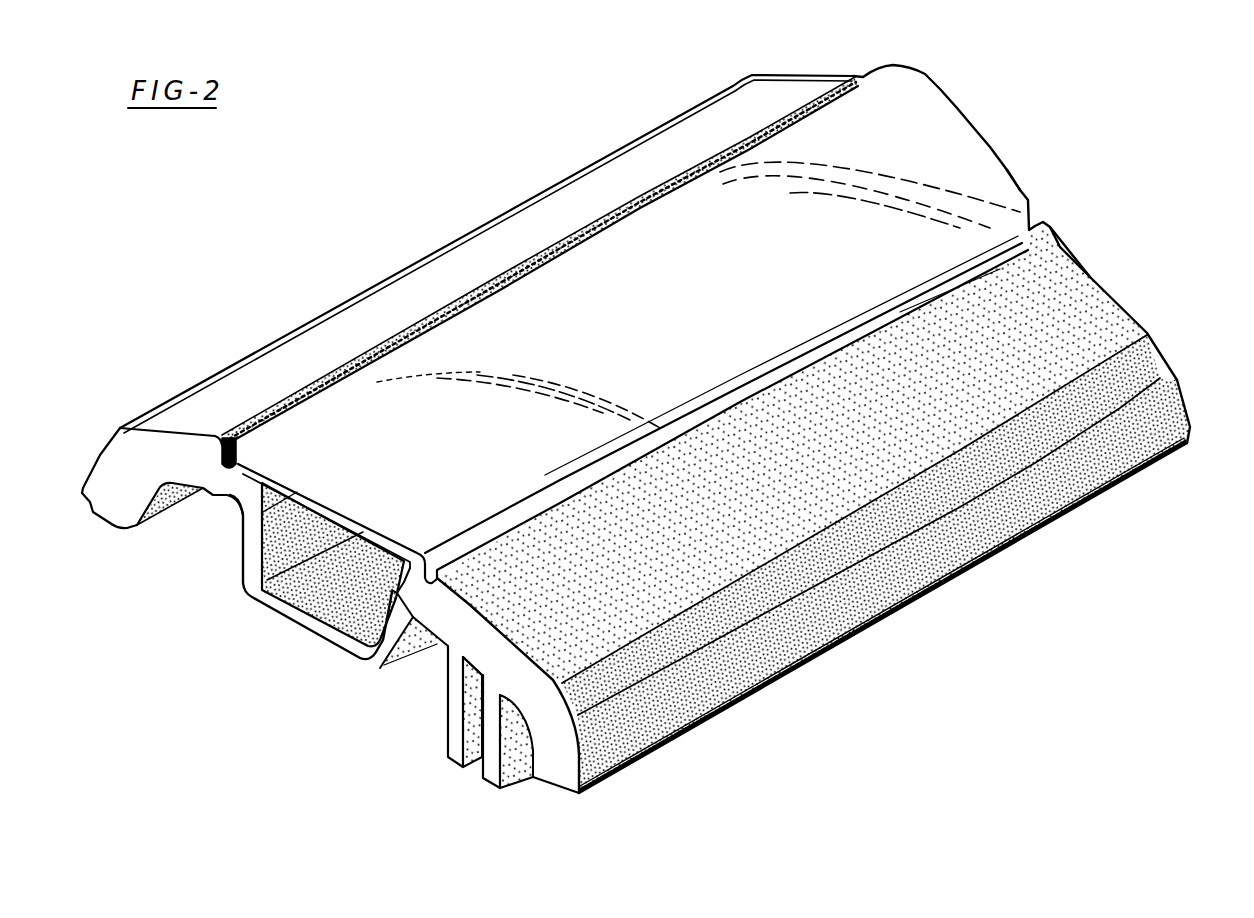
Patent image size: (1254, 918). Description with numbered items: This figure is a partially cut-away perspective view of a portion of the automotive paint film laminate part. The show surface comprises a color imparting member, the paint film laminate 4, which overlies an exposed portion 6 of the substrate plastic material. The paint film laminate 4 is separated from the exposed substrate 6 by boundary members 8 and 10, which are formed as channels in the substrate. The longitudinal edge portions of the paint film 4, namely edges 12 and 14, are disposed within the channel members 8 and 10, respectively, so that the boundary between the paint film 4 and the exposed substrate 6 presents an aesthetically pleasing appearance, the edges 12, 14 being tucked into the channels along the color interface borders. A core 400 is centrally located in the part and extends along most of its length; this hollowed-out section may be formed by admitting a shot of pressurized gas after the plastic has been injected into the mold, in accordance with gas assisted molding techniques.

The paint film laminate 4 is at (583, 342).
The exposed portion of the substrate 6 is at (813, 510).
The boundary member 8 is at (226, 437).
The boundary member 10 is at (1034, 227).
The edge 12 is at (227, 468).
The edge 14 is at (391, 588).
The core 400 is at (318, 523).